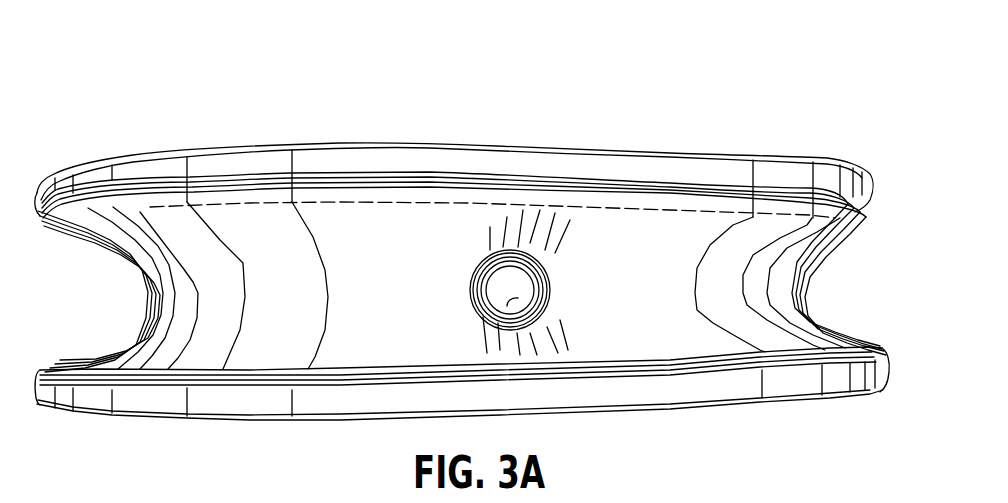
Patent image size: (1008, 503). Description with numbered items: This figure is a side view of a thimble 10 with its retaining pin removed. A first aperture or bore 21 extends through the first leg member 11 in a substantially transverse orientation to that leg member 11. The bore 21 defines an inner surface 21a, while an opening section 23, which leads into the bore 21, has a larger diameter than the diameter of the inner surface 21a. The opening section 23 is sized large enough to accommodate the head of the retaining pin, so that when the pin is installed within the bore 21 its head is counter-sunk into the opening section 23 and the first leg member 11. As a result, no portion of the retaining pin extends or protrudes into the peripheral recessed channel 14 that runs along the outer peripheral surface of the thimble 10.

The thimble 10 is at (184, 138).
The first leg member 11 is at (588, 167).
The peripheral recessed channel 14 is at (390, 280).
The first aperture or bore 21 is at (558, 300).
The opening section 23 is at (515, 287).
The inner surface 21a is at (512, 298).